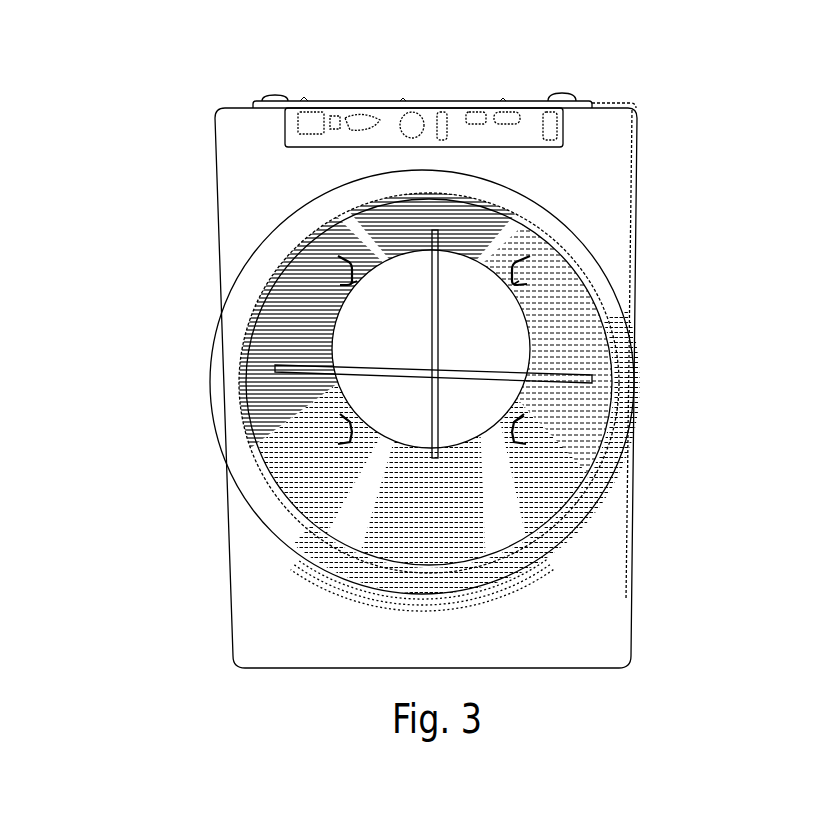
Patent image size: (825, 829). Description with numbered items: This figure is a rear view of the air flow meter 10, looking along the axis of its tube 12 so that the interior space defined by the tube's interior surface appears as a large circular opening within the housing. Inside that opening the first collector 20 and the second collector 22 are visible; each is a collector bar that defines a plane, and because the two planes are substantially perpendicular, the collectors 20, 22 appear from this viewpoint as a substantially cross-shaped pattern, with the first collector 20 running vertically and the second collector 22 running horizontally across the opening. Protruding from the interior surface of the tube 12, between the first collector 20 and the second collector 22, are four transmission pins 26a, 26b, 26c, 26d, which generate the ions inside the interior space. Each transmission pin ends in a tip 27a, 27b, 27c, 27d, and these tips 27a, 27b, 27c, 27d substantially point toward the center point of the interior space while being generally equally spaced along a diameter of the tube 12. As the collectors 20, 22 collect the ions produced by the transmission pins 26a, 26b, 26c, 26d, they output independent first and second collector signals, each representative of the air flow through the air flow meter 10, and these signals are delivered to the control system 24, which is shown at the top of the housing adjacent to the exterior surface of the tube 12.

The air flow meter 10 is at (692, 102).
The tube 12 is at (616, 505).
The first collector 20 is at (432, 338).
The second collector 22 is at (364, 366).
The control system 24 is at (312, 81).
The transmission pin 26a is at (338, 257).
The transmission pin 26b is at (338, 440).
The transmission pin 26c is at (530, 257).
The transmission pin 26d is at (527, 440).
The tip 27a is at (357, 281).
The tip 27b is at (342, 416).
The tip 27c is at (519, 281).
The tip 27d is at (524, 416).